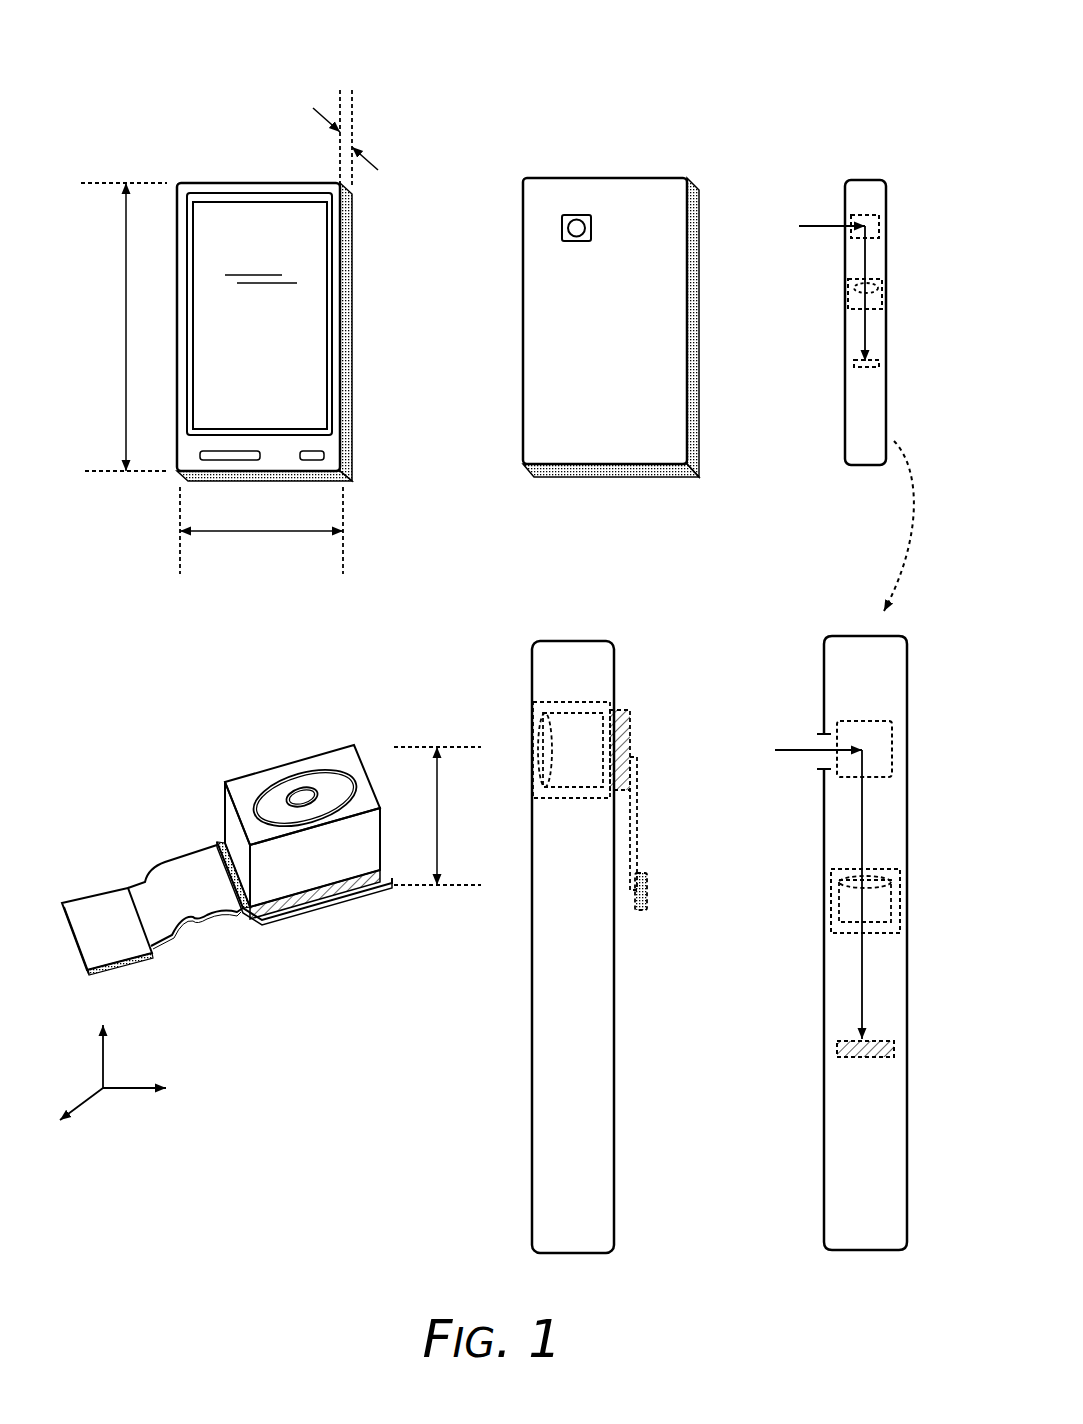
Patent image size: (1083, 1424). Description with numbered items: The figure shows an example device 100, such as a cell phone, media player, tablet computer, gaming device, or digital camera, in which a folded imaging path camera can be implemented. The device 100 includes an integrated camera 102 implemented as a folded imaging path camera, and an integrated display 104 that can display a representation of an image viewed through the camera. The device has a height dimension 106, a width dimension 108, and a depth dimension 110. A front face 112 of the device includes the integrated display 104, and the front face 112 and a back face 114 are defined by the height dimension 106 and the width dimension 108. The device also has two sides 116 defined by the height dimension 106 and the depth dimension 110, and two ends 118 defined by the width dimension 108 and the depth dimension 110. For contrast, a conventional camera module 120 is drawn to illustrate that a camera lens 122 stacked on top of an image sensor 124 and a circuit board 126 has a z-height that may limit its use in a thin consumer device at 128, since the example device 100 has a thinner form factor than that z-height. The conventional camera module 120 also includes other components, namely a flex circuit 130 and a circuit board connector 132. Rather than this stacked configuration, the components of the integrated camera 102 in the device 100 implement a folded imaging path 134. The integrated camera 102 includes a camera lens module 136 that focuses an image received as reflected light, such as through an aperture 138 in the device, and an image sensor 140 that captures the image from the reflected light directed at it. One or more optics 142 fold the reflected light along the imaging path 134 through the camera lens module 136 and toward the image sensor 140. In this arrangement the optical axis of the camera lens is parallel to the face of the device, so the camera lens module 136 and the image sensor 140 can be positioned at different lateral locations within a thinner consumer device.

The device 100 is at (779, 67).
The integrated camera 102 is at (573, 215).
The integrated display 104 is at (232, 220).
The height dimension 106 is at (75, 324).
The width dimension 108 is at (245, 568).
The depth dimension 110 is at (373, 201).
The front face 112 is at (194, 446).
The back face 114 is at (543, 443).
The sides 116 is at (353, 290).
The ends 118 is at (272, 182).
The conventional camera module 120 is at (261, 913).
The camera lens 122 is at (287, 772).
The image sensor 124 is at (340, 879).
The circuit board 126 is at (281, 915).
The thin consumer device 128 is at (496, 699).
The flex circuit 130 is at (172, 913).
The circuit board connector 132 is at (123, 956).
The folded imaging path 134 is at (727, 761).
The camera lens module 136 is at (847, 872).
The aperture 138 is at (823, 734).
The image sensor 140 is at (847, 1041).
The optics 142 is at (847, 721).